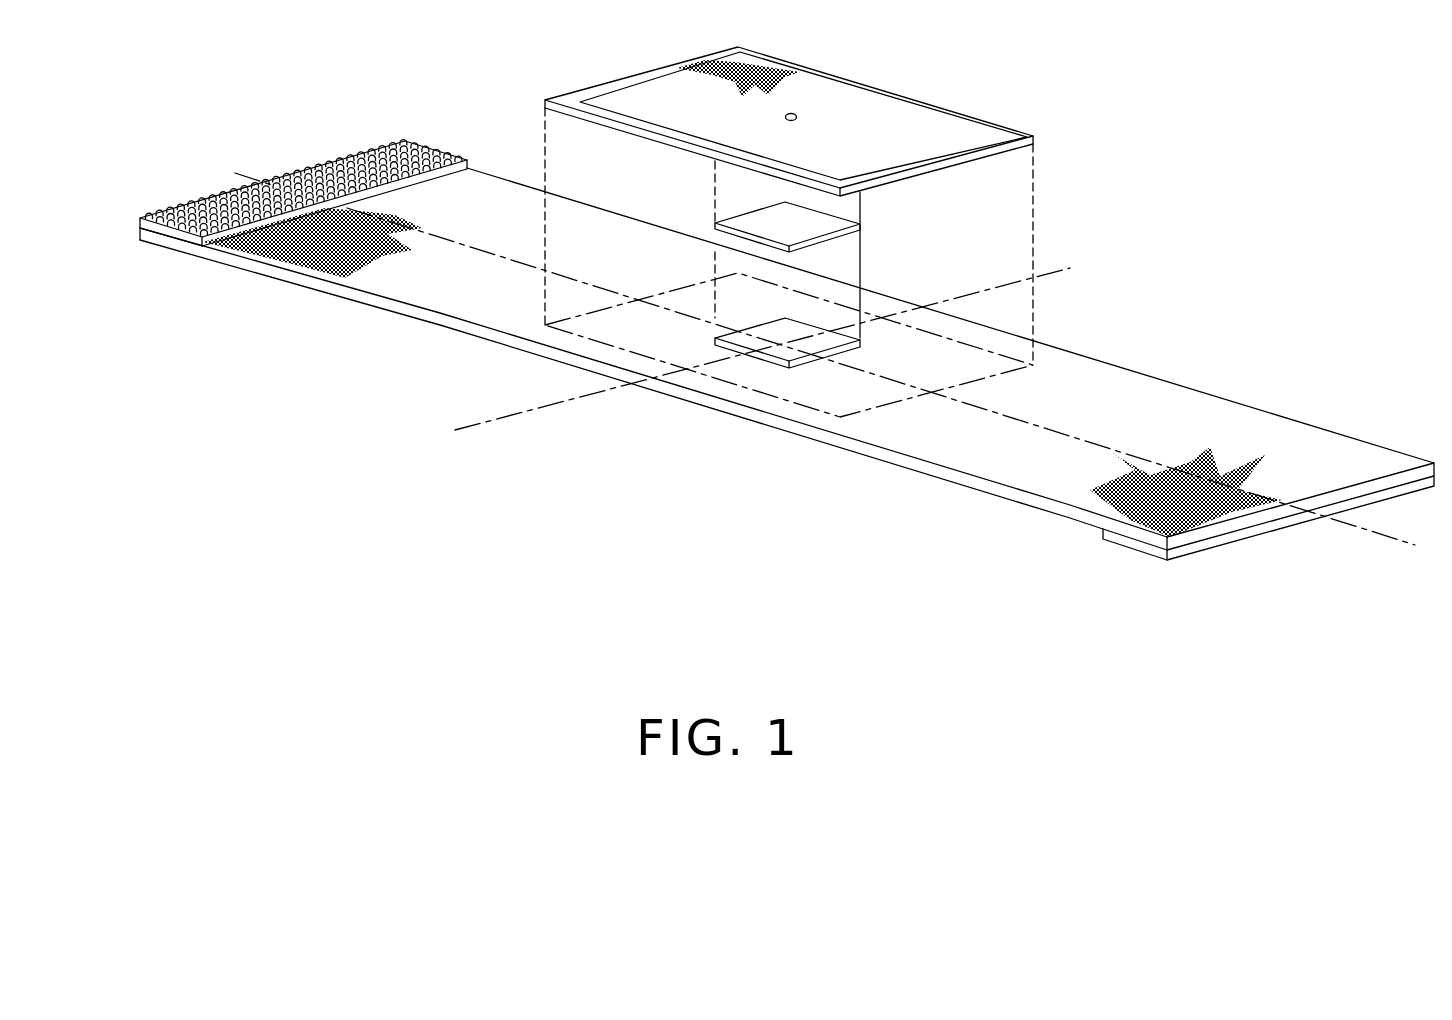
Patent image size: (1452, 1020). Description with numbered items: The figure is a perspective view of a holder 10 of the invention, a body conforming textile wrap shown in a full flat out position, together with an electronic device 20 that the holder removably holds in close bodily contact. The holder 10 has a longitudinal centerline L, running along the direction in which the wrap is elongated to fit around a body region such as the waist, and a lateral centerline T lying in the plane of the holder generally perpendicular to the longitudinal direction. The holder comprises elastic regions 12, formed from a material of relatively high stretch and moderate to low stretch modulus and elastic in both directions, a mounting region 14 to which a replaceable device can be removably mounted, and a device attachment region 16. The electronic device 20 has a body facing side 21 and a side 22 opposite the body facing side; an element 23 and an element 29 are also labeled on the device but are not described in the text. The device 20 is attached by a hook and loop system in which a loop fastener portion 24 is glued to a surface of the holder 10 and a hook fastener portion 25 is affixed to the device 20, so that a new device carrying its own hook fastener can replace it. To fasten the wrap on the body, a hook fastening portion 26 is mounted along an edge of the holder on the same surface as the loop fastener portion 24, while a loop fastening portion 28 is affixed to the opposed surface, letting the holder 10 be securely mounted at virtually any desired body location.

The holder 10 is at (316, 334).
The elastic regions 12 is at (497, 313).
The mounting region 14 is at (640, 343).
The device attachment region 16 is at (817, 372).
The electronic device 20 is at (1018, 84).
The body facing side 21 is at (845, 100).
The side opposite the body facing side 22 is at (592, 120).
The cover frame rim 23 is at (918, 157).
The loop fastener portion 24 is at (773, 355).
The hook fastener portion 25 is at (826, 230).
The hook fastening portion 26 is at (380, 155).
The loop fastening portion 28 is at (1193, 551).
The vent hole 29 is at (794, 112).
The lateral centerline T is at (1065, 268).
The longitudinal centerline L is at (1358, 520).